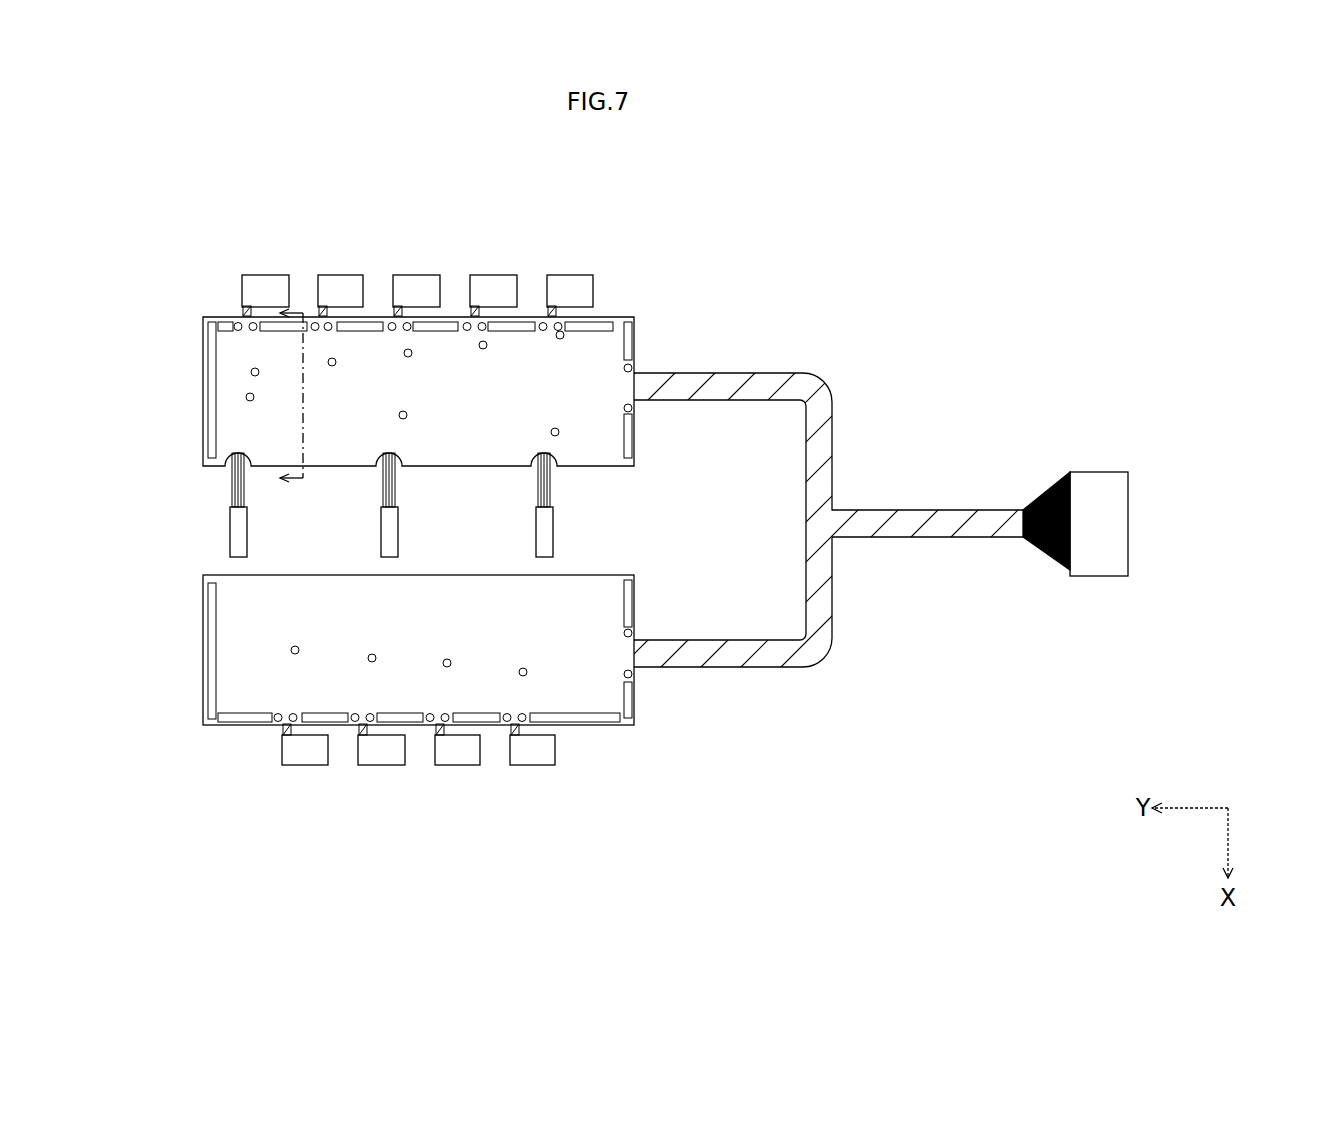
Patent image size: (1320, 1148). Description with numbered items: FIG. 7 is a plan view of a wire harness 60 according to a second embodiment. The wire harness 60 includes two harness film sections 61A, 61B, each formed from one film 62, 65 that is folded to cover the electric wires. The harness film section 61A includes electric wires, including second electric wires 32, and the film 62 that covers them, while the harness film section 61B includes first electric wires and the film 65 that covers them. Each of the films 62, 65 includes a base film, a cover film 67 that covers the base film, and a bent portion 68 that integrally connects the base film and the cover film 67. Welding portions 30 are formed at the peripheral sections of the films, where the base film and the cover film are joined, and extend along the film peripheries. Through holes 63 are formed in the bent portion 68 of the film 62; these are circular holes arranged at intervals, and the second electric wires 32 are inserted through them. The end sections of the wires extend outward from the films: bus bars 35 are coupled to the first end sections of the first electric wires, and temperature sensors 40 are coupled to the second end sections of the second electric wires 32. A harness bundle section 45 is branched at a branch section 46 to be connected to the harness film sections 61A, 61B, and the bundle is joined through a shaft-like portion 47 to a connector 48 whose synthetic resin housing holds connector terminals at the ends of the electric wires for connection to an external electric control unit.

The welding portion 30 is at (227, 330).
The second electric wire 32 is at (234, 497).
The bus bar 35 is at (265, 283).
The temperature sensor 40 is at (245, 540).
The harness bundle section 45 is at (758, 520).
The branch section 46 is at (823, 517).
The shaft portion 47 is at (930, 520).
The connector 48 is at (1098, 490).
The wire harness 60 is at (958, 224).
The harness film section 61A is at (472, 368).
The harness film section 61B is at (472, 694).
The film 62 is at (418, 391).
The through hole 63 is at (233, 468).
The film 65 is at (418, 650).
The cover film 67 is at (605, 340).
The bent portion 68 is at (352, 467).